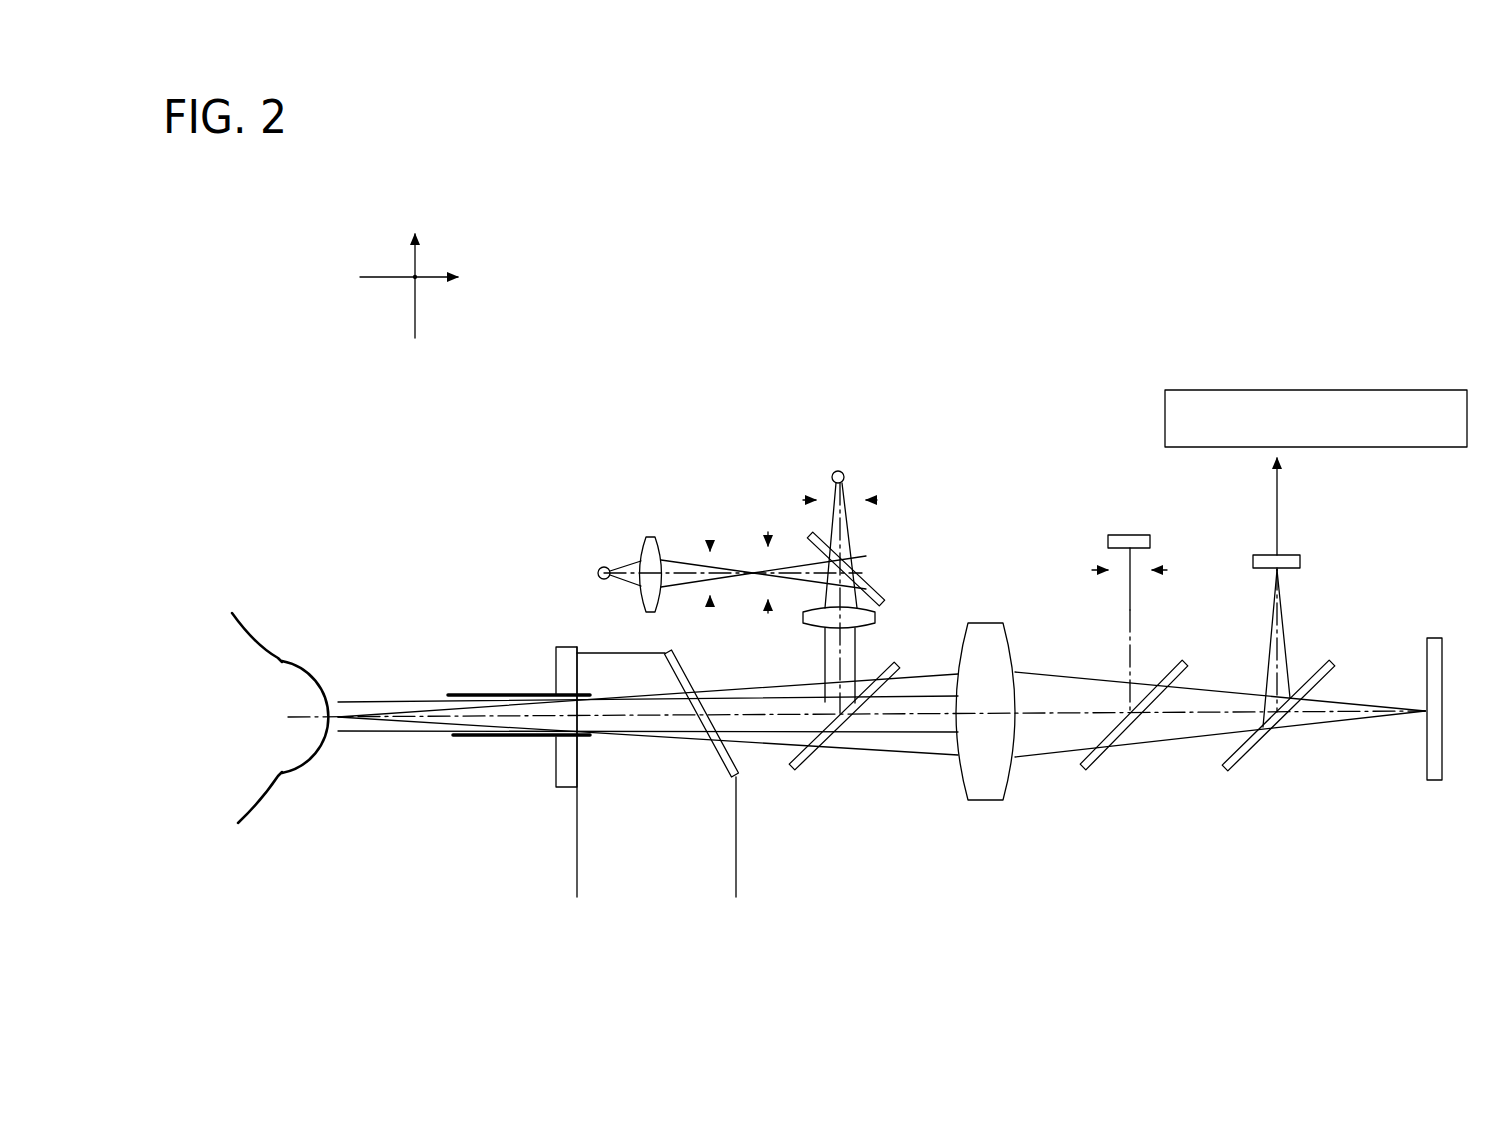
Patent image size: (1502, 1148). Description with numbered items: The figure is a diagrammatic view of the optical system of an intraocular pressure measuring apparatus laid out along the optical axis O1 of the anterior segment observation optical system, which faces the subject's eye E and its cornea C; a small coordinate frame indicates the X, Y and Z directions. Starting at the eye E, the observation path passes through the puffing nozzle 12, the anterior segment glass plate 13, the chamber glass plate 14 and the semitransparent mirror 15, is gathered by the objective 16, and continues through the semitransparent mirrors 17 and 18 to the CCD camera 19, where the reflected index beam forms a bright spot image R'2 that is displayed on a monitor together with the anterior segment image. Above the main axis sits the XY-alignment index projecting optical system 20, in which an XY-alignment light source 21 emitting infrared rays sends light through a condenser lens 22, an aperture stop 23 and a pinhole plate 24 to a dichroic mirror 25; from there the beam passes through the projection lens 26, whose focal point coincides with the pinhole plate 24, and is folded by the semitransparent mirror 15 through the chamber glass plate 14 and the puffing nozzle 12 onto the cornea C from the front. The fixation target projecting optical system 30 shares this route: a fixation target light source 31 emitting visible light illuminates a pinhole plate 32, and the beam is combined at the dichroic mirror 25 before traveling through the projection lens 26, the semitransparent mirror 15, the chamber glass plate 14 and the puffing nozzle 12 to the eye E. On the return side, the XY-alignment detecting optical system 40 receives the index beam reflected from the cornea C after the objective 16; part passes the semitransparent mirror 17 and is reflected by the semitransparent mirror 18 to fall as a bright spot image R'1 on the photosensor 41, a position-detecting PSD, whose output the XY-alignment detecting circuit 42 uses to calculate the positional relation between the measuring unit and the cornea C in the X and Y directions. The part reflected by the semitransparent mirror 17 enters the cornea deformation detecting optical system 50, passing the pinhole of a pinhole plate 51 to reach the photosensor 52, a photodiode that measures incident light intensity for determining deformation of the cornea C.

The puffing nozzle 12 is at (490, 692).
The anterior segment glass plate 13 is at (562, 646).
The chamber glass plate 14 is at (680, 670).
The semitransparent mirror 15 is at (810, 758).
The objective 16 is at (990, 624).
The semitransparent mirror 17 is at (1098, 756).
The semitransparent mirror 18 is at (1250, 752).
The CCD camera 19 is at (1426, 760).
The XY-alignment index projecting optical system 20 is at (665, 452).
The XY-alignment light source 21 is at (602, 566).
The condenser lens 22 is at (646, 536).
The aperture stop 23 is at (711, 542).
The pinhole plate 24 is at (768, 530).
The dichroic mirror 25 is at (870, 590).
The projection lens 26 is at (877, 618).
The fixation target projecting optical system 30 is at (918, 429).
The fixation target light source 31 is at (842, 471).
The pinhole plate 32 is at (882, 498).
The XY-alignment detecting optical system 40 is at (1405, 548).
The photosensor 41 is at (1301, 558).
The XY-alignment detecting circuit 42 is at (1242, 389).
The cornea deformation detecting optical system 50 is at (1090, 500).
The pinhole plate 51 is at (1162, 556).
The photosensor 52 is at (1143, 533).
The eye E is at (266, 606).
The cornea C is at (335, 668).
The optical axis O1 is at (912, 716).
The bright spot image R'1 is at (1326, 591).
The bright spot image R'2 is at (1380, 668).
The X-direction X is at (415, 280).
The Y-direction Y is at (413, 262).
The Z-direction Z is at (425, 280).